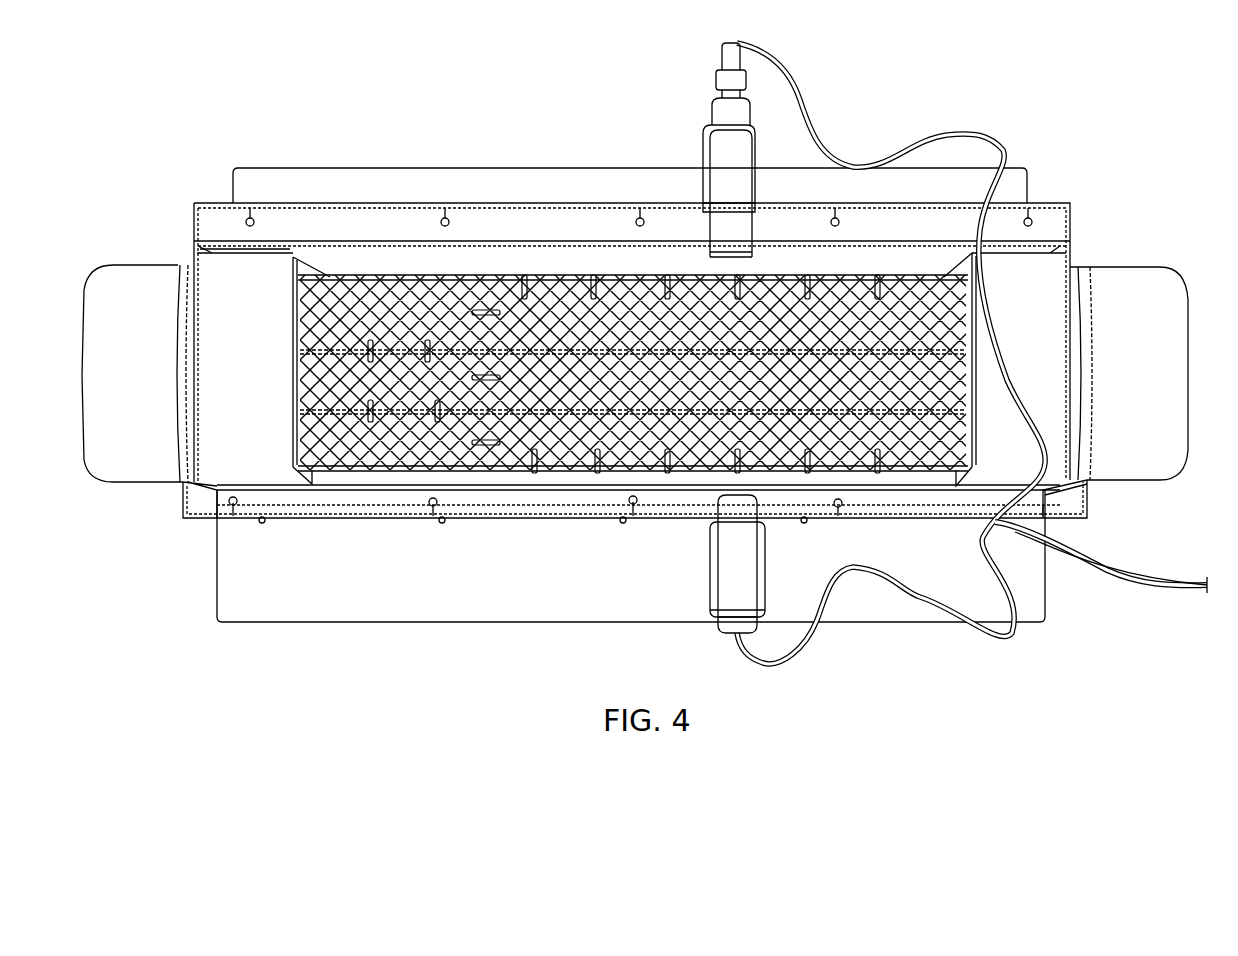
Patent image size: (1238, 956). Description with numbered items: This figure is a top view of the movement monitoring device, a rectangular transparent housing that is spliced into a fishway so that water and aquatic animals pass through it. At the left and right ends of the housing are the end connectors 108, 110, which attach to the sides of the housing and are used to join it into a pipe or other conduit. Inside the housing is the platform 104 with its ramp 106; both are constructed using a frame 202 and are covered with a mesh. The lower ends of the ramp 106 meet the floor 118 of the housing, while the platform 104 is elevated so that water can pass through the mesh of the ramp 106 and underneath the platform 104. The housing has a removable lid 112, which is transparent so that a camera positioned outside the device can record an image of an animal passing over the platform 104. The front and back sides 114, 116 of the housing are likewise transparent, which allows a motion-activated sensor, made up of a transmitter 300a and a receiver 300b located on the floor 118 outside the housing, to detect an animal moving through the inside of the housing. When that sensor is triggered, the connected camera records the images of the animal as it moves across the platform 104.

The platform 104 is at (563, 353).
The ramp 106 is at (403, 328).
The end connector 108 is at (135, 280).
The end connector 110 is at (1120, 280).
The removable lid 112 is at (213, 203).
The front side 114 is at (203, 482).
The back side 116 is at (212, 247).
The floor 118 is at (287, 167).
The frame 202 is at (485, 467).
The transmitter 300a is at (712, 577).
The receiver 300b is at (707, 160).